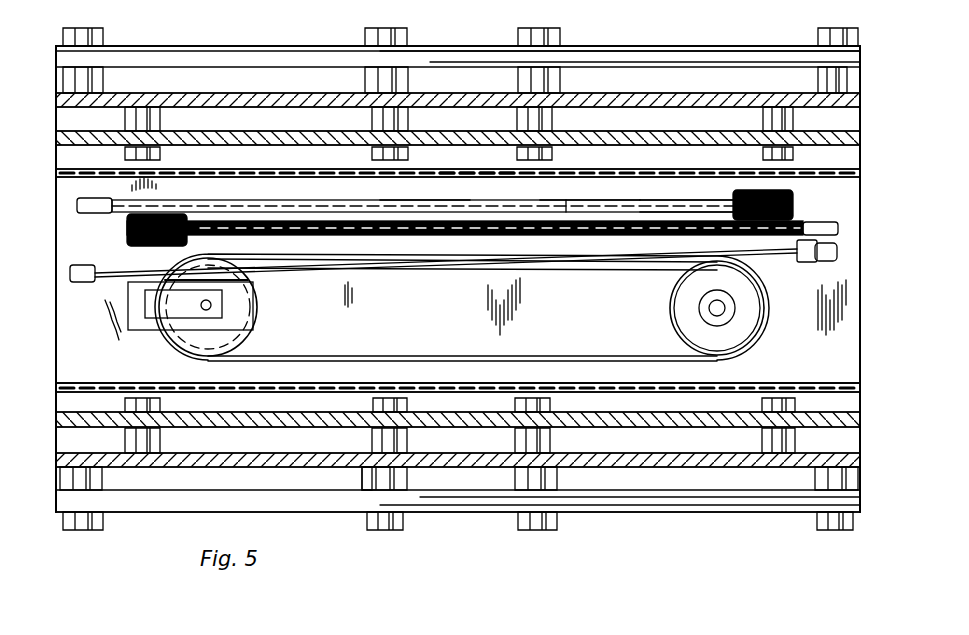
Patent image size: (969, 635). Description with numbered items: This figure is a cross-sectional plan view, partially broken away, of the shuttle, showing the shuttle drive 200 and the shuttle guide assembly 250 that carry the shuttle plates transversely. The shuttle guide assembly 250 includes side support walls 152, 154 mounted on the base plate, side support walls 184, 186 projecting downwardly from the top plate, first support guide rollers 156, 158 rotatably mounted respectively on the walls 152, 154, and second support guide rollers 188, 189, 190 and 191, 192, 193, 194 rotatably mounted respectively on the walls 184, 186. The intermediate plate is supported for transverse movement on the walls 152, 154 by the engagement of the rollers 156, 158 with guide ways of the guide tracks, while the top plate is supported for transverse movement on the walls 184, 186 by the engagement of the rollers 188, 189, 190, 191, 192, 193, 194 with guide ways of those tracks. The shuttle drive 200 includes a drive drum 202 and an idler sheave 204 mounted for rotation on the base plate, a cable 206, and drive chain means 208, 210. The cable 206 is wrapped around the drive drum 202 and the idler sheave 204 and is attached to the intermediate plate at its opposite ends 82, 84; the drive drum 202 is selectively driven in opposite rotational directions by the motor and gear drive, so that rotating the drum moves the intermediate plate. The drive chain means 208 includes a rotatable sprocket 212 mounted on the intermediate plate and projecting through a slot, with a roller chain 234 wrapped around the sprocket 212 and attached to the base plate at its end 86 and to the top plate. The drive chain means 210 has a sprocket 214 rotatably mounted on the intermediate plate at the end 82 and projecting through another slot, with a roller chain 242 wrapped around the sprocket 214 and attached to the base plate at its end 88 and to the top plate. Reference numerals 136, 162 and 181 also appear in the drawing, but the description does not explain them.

The end of intermediate plate 82 is at (838, 170).
The end of intermediate plate 84 is at (58, 390).
The end of base plate 86 is at (856, 298).
The end of base plate 88 is at (56, 325).
The frame post 136 is at (97, 72).
The side support wall 152 is at (677, 37).
The side support wall 154 is at (694, 495).
The first support guide roller 156 is at (518, 71).
The first support guide roller 158 is at (92, 480).
The guide track 162 is at (466, 178).
The right intermediate post 181 is at (765, 115).
The side support wall 184 is at (645, 138).
The side support wall 186 is at (332, 422).
The second support guide roller 188 is at (518, 117).
The second support guide roller 189 is at (378, 116).
The second support guide roller 190 is at (160, 116).
The second support guide roller 191 is at (764, 440).
The second support guide roller 192 is at (516, 440).
The second support guide roller 193 is at (368, 476).
The second support guide roller 194 is at (158, 440).
The shuttle drive 200 is at (365, 199).
The drive drum 202 is at (688, 322).
The idler sheave 204 is at (248, 306).
The cable 206 is at (398, 348).
The drive chain means 208 is at (261, 193).
The drive chain means 210 is at (705, 199).
The sprocket 212 is at (130, 244).
The sprocket 214 is at (787, 200).
The roller chain 234 is at (585, 200).
The roller chain 242 is at (445, 200).
The shuttle guide assembly 250 is at (345, 10).